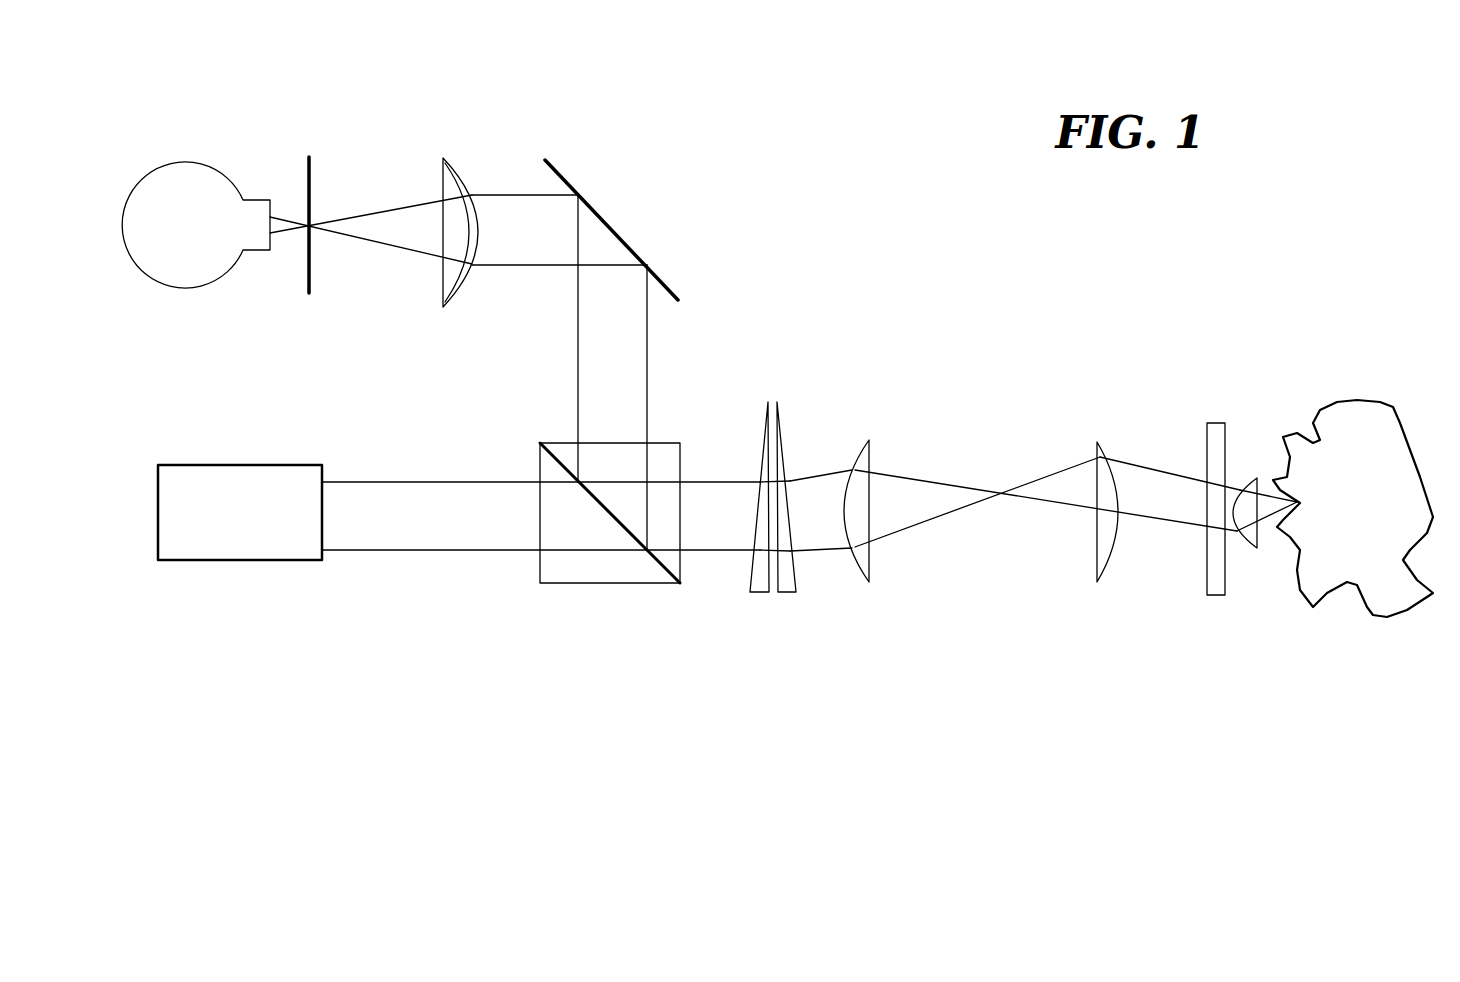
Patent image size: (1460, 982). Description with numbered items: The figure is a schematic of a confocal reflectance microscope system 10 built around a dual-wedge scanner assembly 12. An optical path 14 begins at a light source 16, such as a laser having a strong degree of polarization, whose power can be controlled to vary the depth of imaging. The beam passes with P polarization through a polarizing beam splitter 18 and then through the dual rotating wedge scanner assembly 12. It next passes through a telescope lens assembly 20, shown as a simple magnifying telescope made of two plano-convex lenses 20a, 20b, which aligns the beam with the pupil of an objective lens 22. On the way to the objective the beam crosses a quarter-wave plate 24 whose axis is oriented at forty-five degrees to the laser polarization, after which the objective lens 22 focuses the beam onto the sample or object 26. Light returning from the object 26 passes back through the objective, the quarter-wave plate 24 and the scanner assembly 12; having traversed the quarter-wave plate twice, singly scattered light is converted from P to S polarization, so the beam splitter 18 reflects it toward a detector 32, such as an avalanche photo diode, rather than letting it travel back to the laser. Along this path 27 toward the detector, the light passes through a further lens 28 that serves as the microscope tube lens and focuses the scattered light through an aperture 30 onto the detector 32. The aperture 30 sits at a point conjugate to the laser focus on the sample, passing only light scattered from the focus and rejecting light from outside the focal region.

The confocal reflectance microscope system 10 is at (838, 182).
The dual-wedge scanner assembly 12 is at (772, 393).
The optical path 14 is at (410, 563).
The light source 16 is at (258, 560).
The polarizing beam splitter 18 is at (541, 583).
The telescope lens assembly 20 is at (1070, 549).
The plano-convex lens 20a is at (870, 566).
The plano-convex lens 20b is at (1093, 555).
The objective lens 22 is at (1247, 552).
The quarter-wave plate 24 is at (1205, 432).
The object 26 is at (1367, 612).
The path toward the detector 27 is at (563, 386).
The tube lens 28 is at (497, 163).
The aperture 30 is at (312, 181).
The detector 32 is at (186, 160).